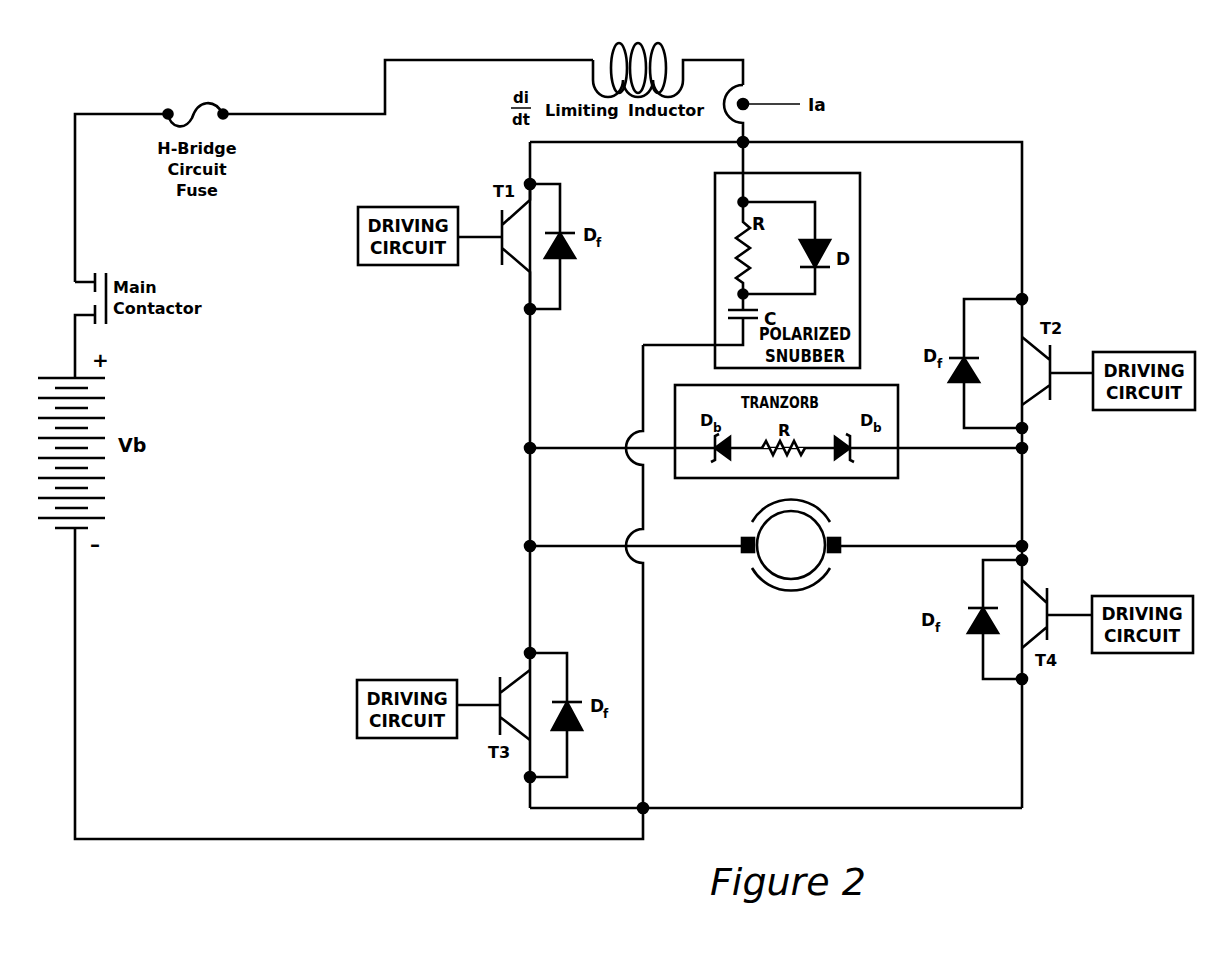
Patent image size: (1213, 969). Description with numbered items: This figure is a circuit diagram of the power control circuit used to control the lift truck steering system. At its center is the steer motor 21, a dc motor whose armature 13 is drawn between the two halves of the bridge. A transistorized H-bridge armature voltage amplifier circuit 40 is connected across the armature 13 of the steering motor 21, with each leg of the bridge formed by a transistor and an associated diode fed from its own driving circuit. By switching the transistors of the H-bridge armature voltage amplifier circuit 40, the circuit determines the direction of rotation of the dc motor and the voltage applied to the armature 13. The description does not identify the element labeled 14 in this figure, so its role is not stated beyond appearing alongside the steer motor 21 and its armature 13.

The armature 13 is at (826, 558).
The permanent magnet field 14 is at (775, 590).
The steer motor 21 is at (800, 572).
The H-bridge armature voltage amplifier circuit 40 is at (1080, 293).